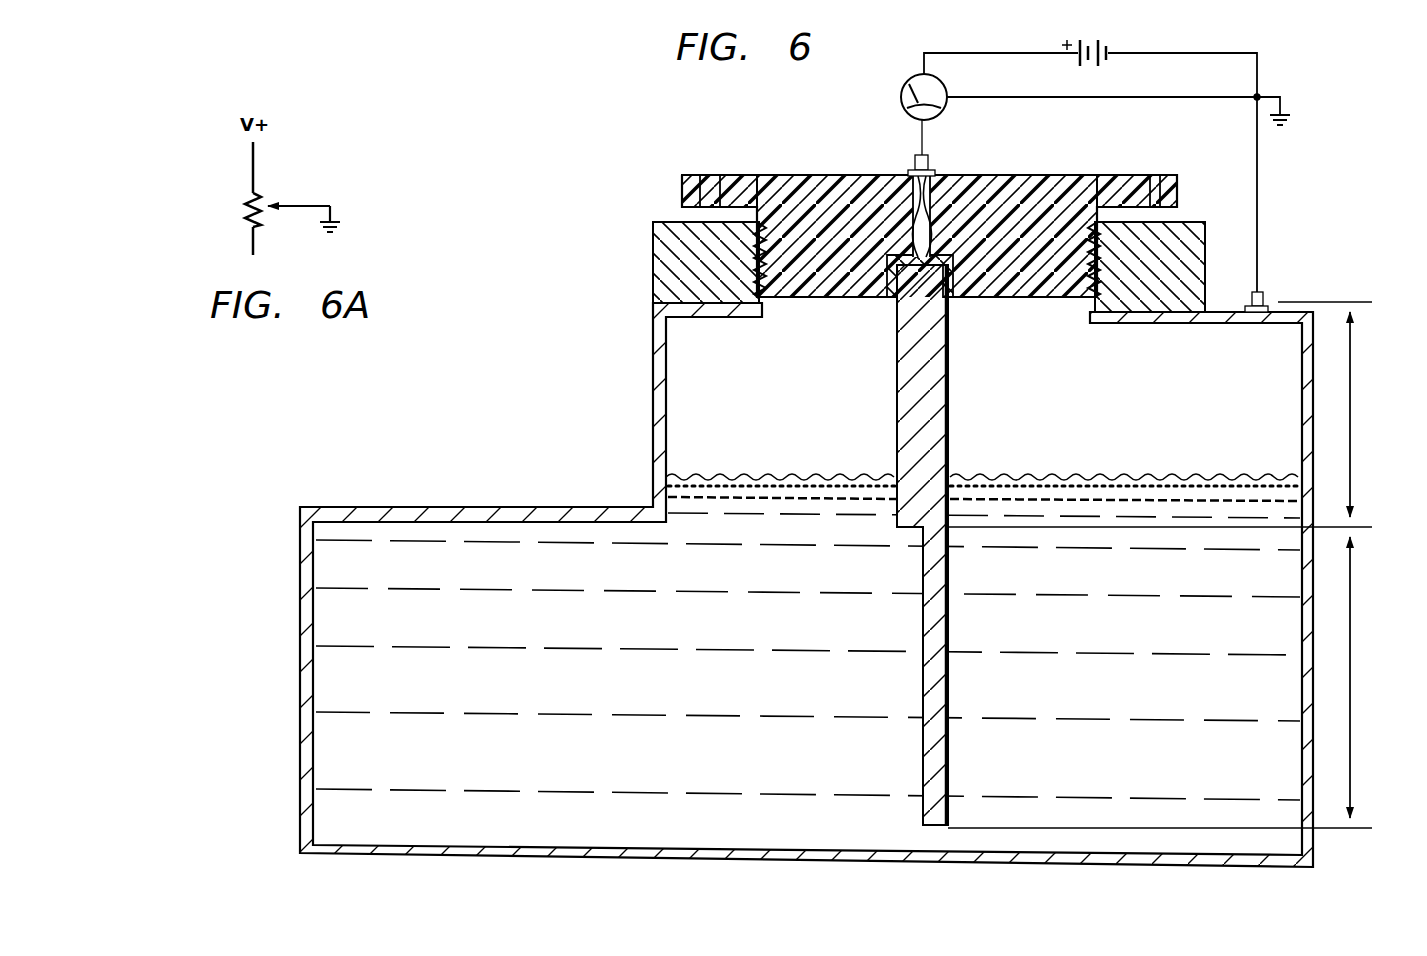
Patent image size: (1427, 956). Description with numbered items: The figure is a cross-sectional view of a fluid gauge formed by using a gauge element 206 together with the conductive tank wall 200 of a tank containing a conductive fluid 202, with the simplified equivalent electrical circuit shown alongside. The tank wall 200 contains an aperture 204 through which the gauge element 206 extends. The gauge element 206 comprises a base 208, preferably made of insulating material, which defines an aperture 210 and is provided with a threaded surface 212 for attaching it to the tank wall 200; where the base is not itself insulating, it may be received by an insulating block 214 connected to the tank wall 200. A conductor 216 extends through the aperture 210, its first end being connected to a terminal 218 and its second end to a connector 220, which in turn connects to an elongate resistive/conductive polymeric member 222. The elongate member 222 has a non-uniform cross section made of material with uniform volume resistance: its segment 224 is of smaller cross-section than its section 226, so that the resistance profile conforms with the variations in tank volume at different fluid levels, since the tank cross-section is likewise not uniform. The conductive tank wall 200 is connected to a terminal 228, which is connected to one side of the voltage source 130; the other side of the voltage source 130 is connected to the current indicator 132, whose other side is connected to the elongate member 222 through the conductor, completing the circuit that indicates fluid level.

In FIG. 6, the voltage source 130 is at (1106, 34).
In FIG. 6, the current indicator 132 is at (908, 82).
In FIG. 6, the conductive tank wall 200 is at (538, 372).
In FIG. 6A, the conductive tank wall 200 is at (336, 216).
In FIG. 6, the conductive fluid 202 is at (1122, 470).
In FIG. 6A, the conductive fluid 202 is at (298, 198).
In FIG. 6, the aperture 204 is at (1067, 308).
In FIG. 6, the gauge element 206 is at (749, 146).
In FIG. 6, the base 208 is at (1019, 180).
In FIG. 6, the aperture 210 is at (934, 185).
In FIG. 6, the threaded surface 212 is at (1092, 208).
In FIG. 6, the insulating block 214 is at (654, 264).
In FIG. 6, the conductor 216 is at (910, 186).
In FIG. 6, the terminal 218 is at (914, 158).
In FIG. 6, the connector 220 is at (822, 300).
In FIG. 6A, the connector 220 is at (241, 199).
In FIG. 6, the elongate resistive/conductive polymeric member 222 is at (896, 420).
In FIG. 6, the segment 224 is at (1352, 674).
In FIG. 6, the section 226 is at (1352, 412).
In FIG. 6, the terminal 228 is at (1262, 300).